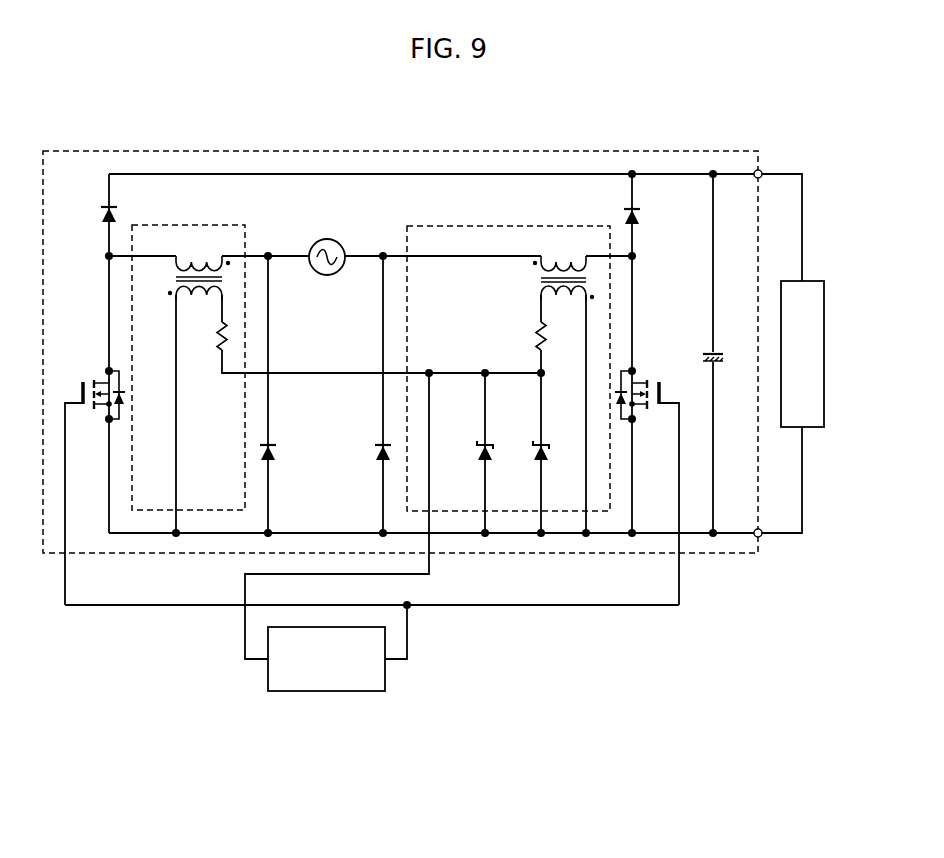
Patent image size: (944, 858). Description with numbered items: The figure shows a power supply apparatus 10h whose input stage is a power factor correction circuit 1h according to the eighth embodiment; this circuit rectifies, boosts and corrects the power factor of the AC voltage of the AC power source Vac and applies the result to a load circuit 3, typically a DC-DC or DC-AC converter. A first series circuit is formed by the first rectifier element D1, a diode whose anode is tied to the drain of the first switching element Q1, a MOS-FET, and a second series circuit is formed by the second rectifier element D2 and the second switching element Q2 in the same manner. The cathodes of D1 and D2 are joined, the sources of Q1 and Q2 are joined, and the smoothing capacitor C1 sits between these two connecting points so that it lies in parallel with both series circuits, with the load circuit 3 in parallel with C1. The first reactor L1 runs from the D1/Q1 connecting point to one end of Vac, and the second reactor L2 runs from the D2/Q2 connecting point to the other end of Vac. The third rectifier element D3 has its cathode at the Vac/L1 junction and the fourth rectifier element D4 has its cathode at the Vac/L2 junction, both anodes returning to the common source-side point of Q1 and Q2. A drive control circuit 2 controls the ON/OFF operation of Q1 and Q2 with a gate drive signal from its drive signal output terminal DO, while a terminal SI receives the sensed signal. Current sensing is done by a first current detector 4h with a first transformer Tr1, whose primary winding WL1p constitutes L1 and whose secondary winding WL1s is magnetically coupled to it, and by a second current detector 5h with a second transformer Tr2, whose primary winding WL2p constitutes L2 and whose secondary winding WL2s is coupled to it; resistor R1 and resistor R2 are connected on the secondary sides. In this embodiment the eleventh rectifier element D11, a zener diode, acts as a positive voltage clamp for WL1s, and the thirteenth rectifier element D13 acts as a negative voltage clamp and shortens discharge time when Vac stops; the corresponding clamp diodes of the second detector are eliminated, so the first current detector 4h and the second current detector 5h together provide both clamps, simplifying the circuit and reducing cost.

The power supply apparatus 10h is at (84, 121).
The power factor correction circuit 1h is at (190, 151).
The drive control circuit 2 is at (325, 692).
The load circuit 3 is at (825, 290).
The first current detector 4h is at (507, 512).
The second current detector 5h is at (150, 511).
The first transformer Tr1 is at (543, 255).
The second transformer Tr2 is at (194, 275).
The first reactor L1 is at (574, 232).
The second reactor L2 is at (215, 228).
The primary winding WL1p is at (572, 262).
The secondary winding WL1s is at (560, 299).
The primary winding WL2p is at (211, 262).
The secondary winding WL2s is at (200, 300).
The resistor R1 is at (527, 337).
The resistor R2 is at (208, 338).
The first rectifier element D1 is at (644, 216).
The second rectifier element D2 is at (121, 215).
The third rectifier element D3 is at (370, 455).
The fourth rectifier element D4 is at (282, 455).
The eleventh rectifier element D11 is at (469, 453).
The thirteenth rectifier element D13 is at (525, 453).
The first switching element Q1 is at (640, 404).
The second switching element Q2 is at (101, 404).
The smoothing capacitor C1 is at (726, 360).
The AC power source Vac is at (327, 269).
The signal input terminal SI is at (254, 673).
The drive signal output terminal DO is at (404, 673).